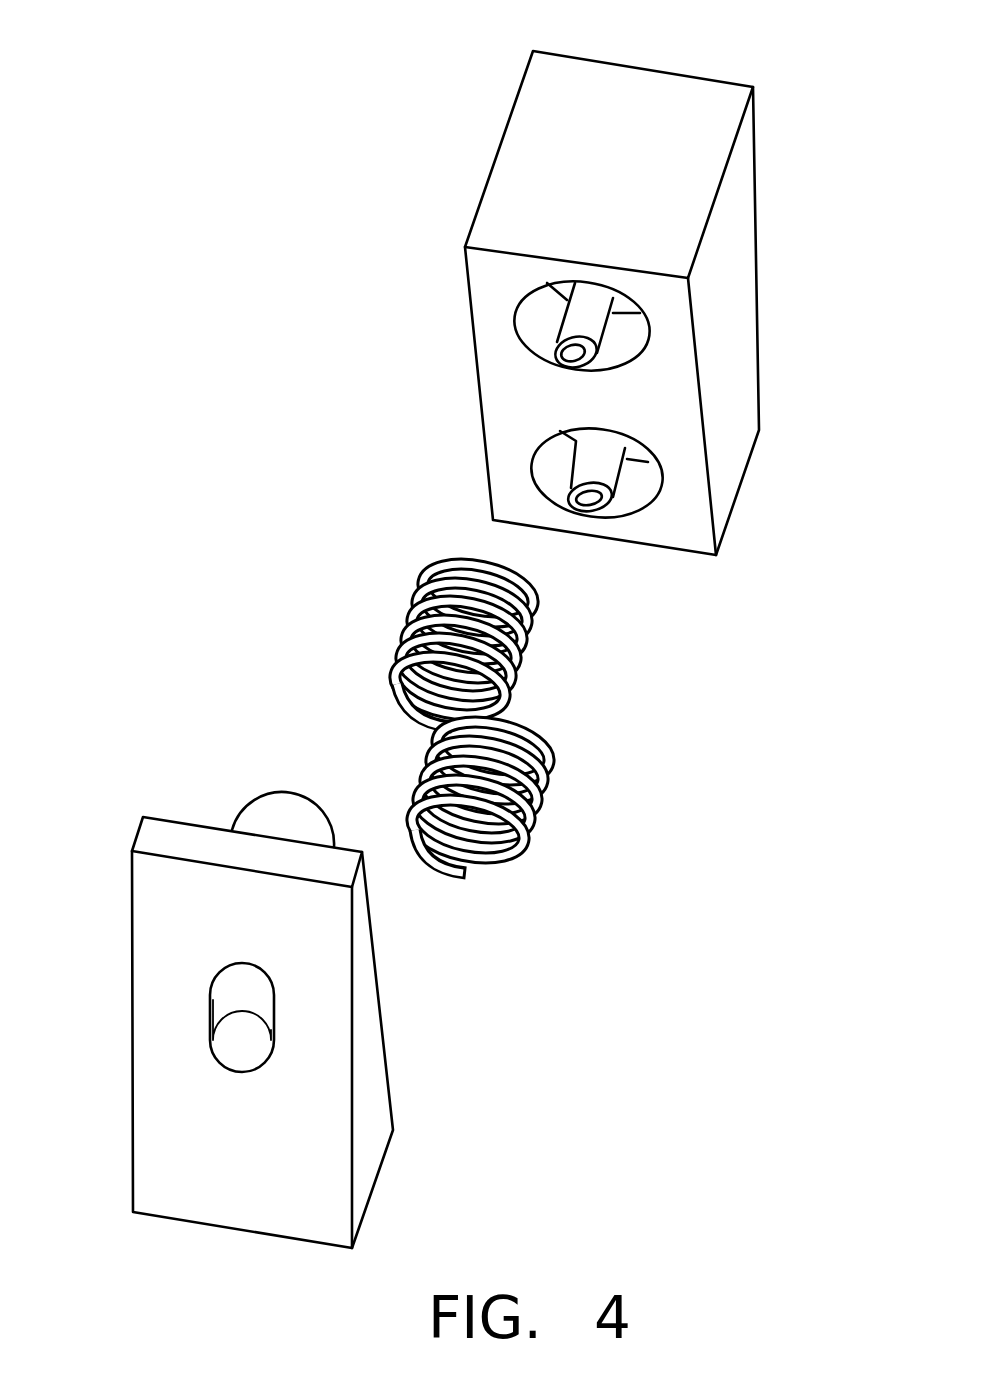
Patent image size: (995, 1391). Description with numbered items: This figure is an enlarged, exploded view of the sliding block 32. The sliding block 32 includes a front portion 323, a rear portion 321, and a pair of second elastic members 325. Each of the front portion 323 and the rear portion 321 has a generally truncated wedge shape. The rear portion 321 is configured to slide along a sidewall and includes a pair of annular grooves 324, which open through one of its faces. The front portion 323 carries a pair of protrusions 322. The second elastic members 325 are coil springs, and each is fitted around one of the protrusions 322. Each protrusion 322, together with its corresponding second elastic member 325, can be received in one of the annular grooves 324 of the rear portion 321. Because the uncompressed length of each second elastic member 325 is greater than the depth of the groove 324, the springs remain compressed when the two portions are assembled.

The sliding block 32 is at (358, 41).
The rear portion 321 is at (659, 303).
The protrusion 322 is at (288, 810).
The front portion 323 is at (313, 978).
The annular groove 324 is at (637, 343).
The second elastic member 325 is at (535, 790).